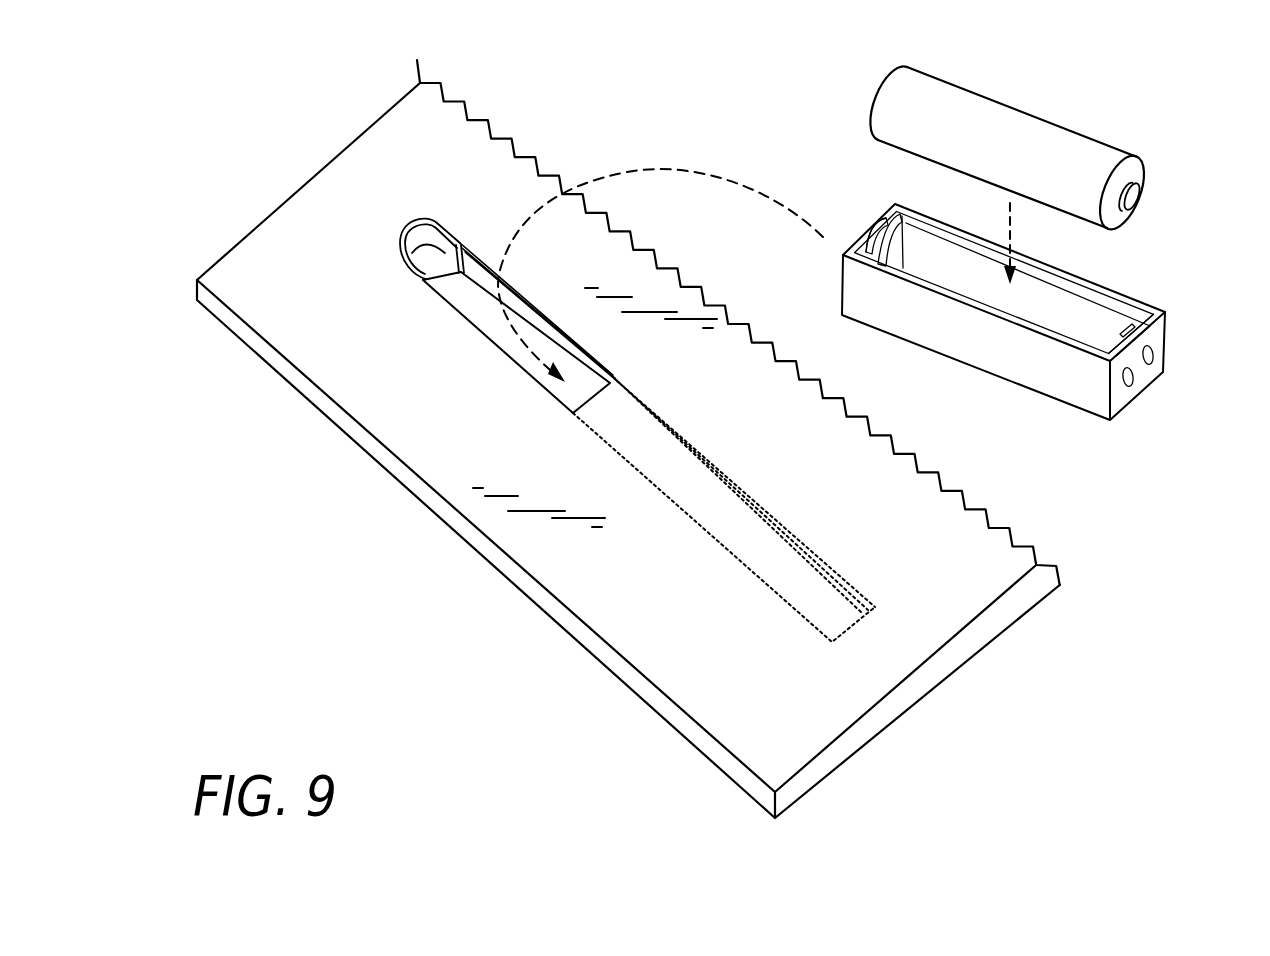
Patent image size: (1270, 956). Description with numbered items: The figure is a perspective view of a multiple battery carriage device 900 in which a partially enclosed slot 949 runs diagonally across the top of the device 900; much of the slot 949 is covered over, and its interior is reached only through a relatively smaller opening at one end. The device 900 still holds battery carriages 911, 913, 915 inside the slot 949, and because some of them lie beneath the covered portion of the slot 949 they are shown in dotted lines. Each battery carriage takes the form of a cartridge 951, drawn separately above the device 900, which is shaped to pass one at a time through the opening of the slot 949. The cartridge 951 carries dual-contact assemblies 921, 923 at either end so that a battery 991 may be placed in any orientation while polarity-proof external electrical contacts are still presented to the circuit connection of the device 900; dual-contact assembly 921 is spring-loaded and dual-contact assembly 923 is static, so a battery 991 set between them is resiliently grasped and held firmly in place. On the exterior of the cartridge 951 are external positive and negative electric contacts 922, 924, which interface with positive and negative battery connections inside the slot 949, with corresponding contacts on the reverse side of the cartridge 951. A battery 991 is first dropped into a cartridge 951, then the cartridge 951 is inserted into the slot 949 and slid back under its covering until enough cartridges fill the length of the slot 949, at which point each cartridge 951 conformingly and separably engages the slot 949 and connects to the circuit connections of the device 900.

The device 900 is at (275, 130).
The slot 949 is at (440, 308).
The battery carriage 911 is at (502, 351).
The battery carriage 913 is at (617, 452).
The battery carriage 915 is at (772, 590).
The cartridge 951 is at (1075, 409).
The dual-contact assembly 921 is at (870, 238).
The dual-contact assembly 923 is at (1148, 303).
The external negative electric contact 924 is at (1153, 354).
The external positive electric contact 922 is at (1130, 384).
The battery 991 is at (1022, 108).